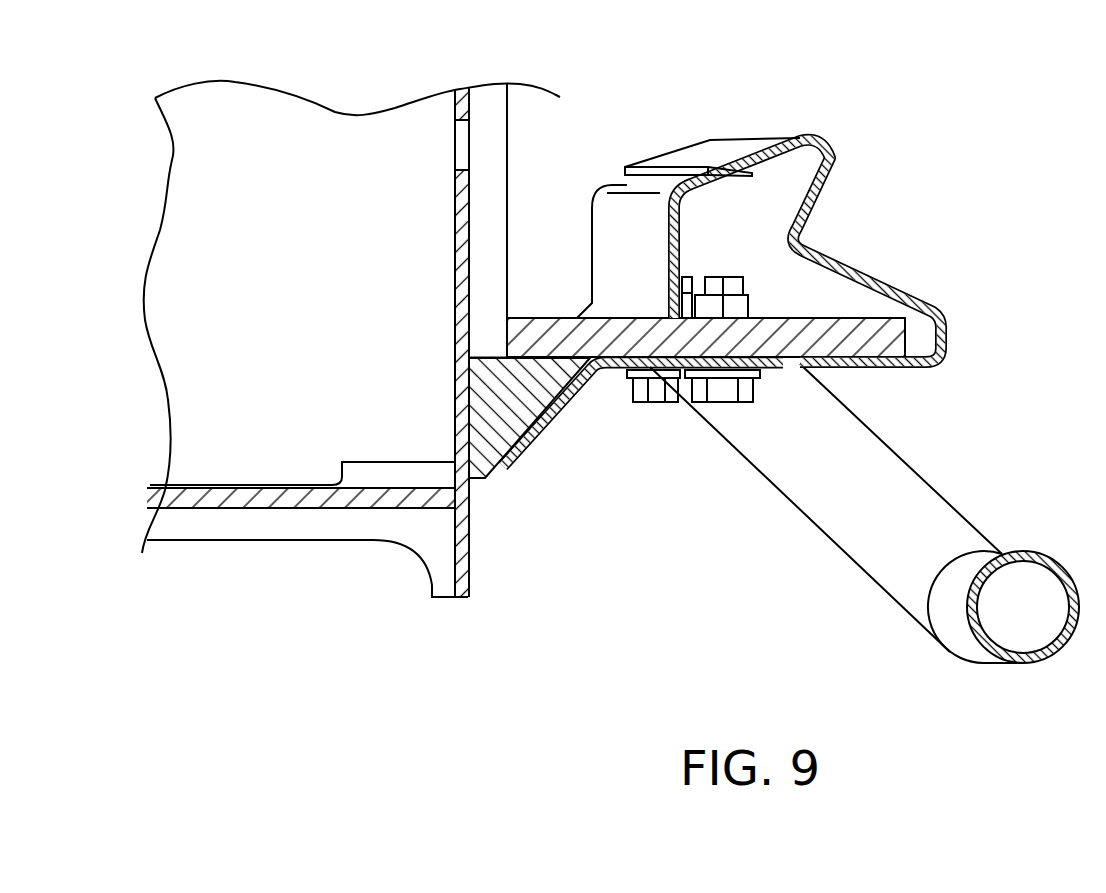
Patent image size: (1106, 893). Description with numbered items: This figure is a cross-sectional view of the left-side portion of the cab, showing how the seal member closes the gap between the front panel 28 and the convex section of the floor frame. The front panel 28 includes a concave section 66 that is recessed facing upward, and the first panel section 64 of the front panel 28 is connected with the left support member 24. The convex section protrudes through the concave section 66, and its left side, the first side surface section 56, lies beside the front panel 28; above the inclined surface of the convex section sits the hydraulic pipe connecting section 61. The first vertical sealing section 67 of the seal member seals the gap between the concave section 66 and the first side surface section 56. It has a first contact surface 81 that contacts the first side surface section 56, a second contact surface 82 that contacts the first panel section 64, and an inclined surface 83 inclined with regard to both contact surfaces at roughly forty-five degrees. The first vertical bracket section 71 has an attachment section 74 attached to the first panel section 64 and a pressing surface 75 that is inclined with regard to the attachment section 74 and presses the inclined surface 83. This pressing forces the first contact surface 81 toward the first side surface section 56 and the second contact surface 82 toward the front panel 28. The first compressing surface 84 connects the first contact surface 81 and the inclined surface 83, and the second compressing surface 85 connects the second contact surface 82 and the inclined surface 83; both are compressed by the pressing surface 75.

The left support member 24 is at (702, 148).
The front panel 28 is at (880, 340).
The first side surface section 56 is at (466, 535).
The hydraulic pipe connecting section 61 is at (247, 502).
The first panel section 64 is at (778, 338).
The concave section 66 is at (496, 337).
The first vertical sealing section 67 is at (520, 412).
The first vertical bracket section 71 is at (653, 414).
The attachment section 74 is at (675, 365).
The pressing surface 75 is at (547, 430).
The first contact surface 81 is at (447, 403).
The second contact surface 82 is at (545, 348).
The inclined surface 83 is at (514, 461).
The first compressing surface 84 is at (483, 488).
The second compressing surface 85 is at (597, 355).